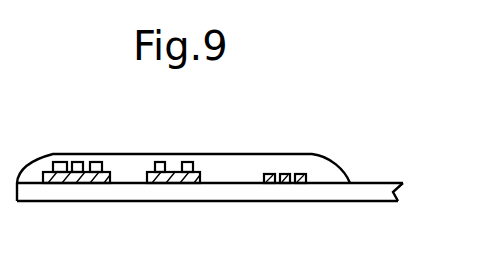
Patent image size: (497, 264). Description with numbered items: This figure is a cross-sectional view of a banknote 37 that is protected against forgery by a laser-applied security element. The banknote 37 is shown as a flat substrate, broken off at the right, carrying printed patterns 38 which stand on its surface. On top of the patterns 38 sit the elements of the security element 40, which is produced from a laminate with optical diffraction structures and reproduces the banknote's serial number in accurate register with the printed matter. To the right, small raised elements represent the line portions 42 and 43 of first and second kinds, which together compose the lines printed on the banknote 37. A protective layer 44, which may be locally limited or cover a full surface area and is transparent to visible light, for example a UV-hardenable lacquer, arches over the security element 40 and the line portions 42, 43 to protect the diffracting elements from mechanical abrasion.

The banknote 37 is at (400, 200).
The patterns 38 is at (163, 176).
The security element 40 is at (80, 162).
The line portions of first kind 42 is at (300, 174).
The line portions of second kind 43 is at (285, 183).
The protective layer 44 is at (323, 170).